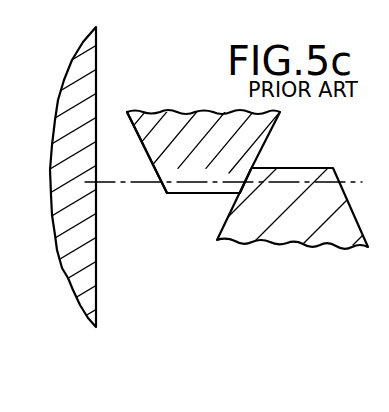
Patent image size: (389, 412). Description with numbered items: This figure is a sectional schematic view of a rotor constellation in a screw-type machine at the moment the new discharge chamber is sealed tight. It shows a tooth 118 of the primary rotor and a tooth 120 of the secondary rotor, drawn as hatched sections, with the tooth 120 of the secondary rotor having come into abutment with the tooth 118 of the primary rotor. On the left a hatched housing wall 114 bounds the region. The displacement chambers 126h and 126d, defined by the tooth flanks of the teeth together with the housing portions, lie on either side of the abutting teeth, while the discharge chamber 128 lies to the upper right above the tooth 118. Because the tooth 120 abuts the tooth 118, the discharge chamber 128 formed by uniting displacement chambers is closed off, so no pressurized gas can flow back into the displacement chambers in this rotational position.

The wall 114 is at (72, 82).
The tooth of secondary rotor 120 is at (182, 119).
The tooth of primary rotor 118 is at (288, 222).
The displacement chamber 126h is at (120, 150).
The displacement chamber 126d is at (189, 234).
The discharge chamber 128 is at (336, 148).